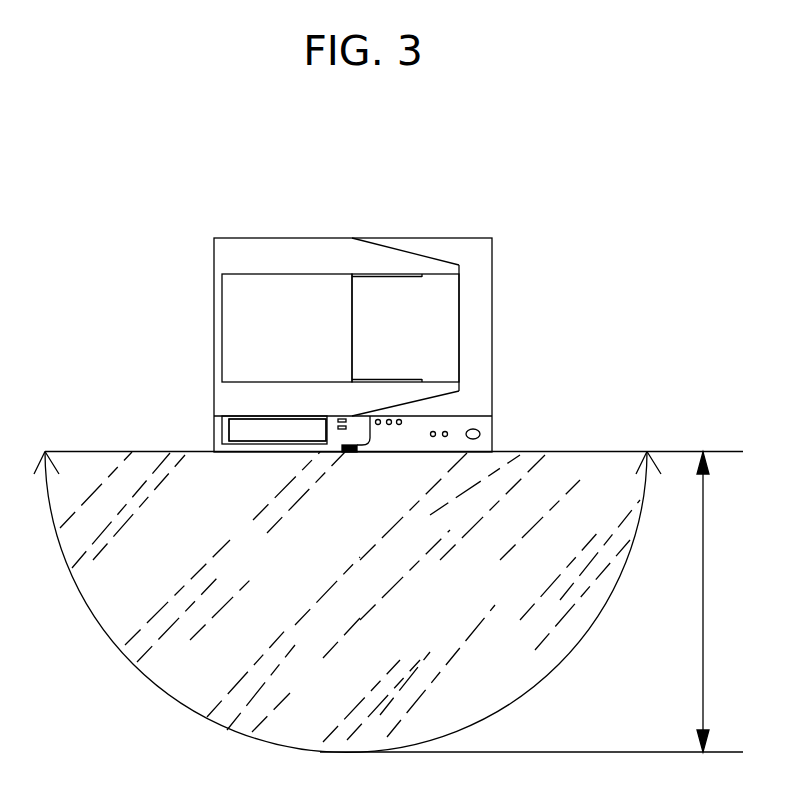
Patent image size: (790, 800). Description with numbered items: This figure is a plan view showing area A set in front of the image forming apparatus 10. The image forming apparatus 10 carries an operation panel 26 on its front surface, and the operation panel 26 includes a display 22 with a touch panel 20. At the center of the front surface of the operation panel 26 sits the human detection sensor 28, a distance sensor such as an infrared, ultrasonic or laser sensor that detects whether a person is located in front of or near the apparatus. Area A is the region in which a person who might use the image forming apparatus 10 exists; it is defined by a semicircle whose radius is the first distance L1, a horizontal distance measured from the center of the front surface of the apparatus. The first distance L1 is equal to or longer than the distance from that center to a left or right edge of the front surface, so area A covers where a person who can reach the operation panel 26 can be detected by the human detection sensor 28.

The image forming apparatus 10 is at (261, 238).
The touch panel 20 is at (235, 430).
The display 22 is at (277, 430).
The operation panel 26 is at (486, 430).
The human detection sensor 28 is at (340, 445).
The area A is at (241, 563).
The first distance L1 is at (531, 602).